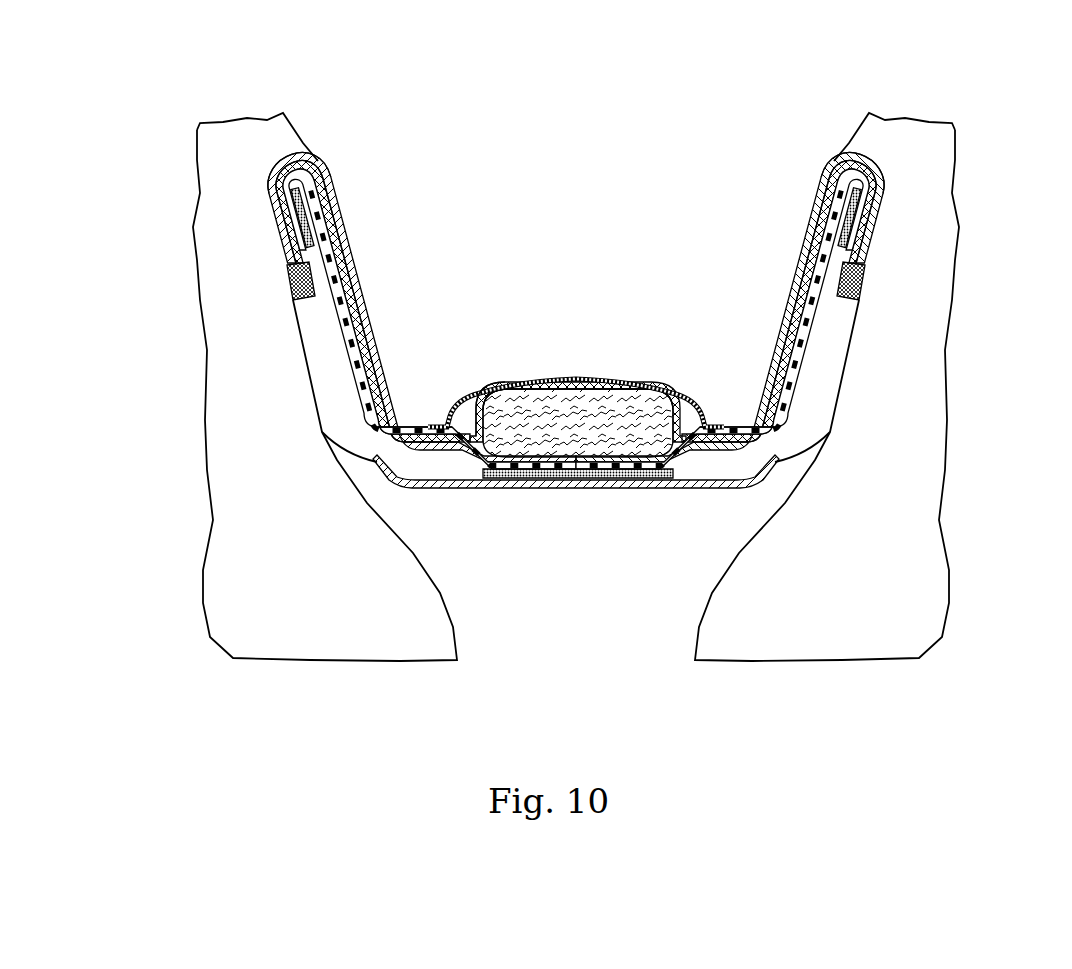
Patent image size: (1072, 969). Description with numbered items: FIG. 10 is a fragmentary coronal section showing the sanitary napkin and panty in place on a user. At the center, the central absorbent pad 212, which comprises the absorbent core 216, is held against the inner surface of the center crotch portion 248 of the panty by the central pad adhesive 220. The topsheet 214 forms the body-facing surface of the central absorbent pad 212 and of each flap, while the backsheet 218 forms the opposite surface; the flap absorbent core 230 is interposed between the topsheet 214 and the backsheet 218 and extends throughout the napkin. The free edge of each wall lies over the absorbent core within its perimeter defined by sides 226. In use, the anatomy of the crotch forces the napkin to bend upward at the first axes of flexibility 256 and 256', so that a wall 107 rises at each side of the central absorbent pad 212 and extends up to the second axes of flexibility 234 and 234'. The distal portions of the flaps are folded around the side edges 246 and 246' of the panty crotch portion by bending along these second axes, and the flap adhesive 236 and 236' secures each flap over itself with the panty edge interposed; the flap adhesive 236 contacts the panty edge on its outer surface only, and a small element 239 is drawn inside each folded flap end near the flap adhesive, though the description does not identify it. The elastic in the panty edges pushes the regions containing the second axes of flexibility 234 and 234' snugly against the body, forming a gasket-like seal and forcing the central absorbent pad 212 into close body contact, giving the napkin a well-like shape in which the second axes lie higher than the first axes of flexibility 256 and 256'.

The wall 107 is at (460, 392).
The central absorbent pad 212 is at (569, 381).
The topsheet 214 is at (343, 250).
The absorbent core 216 is at (627, 392).
The backsheet 218 is at (355, 363).
The central pad adhesive 220 is at (570, 478).
The side 226 is at (466, 414).
The flap absorbent core 230 is at (353, 308).
The second flexible axis 234 is at (331, 140).
The second flexible axis 234' is at (924, 121).
The flap adhesive 236 is at (211, 200).
The flap adhesive 236' is at (938, 197).
The end block 239 is at (288, 270).
The side edge 246 is at (400, 319).
The side edge 246' is at (757, 319).
The center crotch portion 248 is at (540, 478).
The first axis of flexibility 256 is at (423, 376).
The first axis of flexibility 256' is at (745, 341).